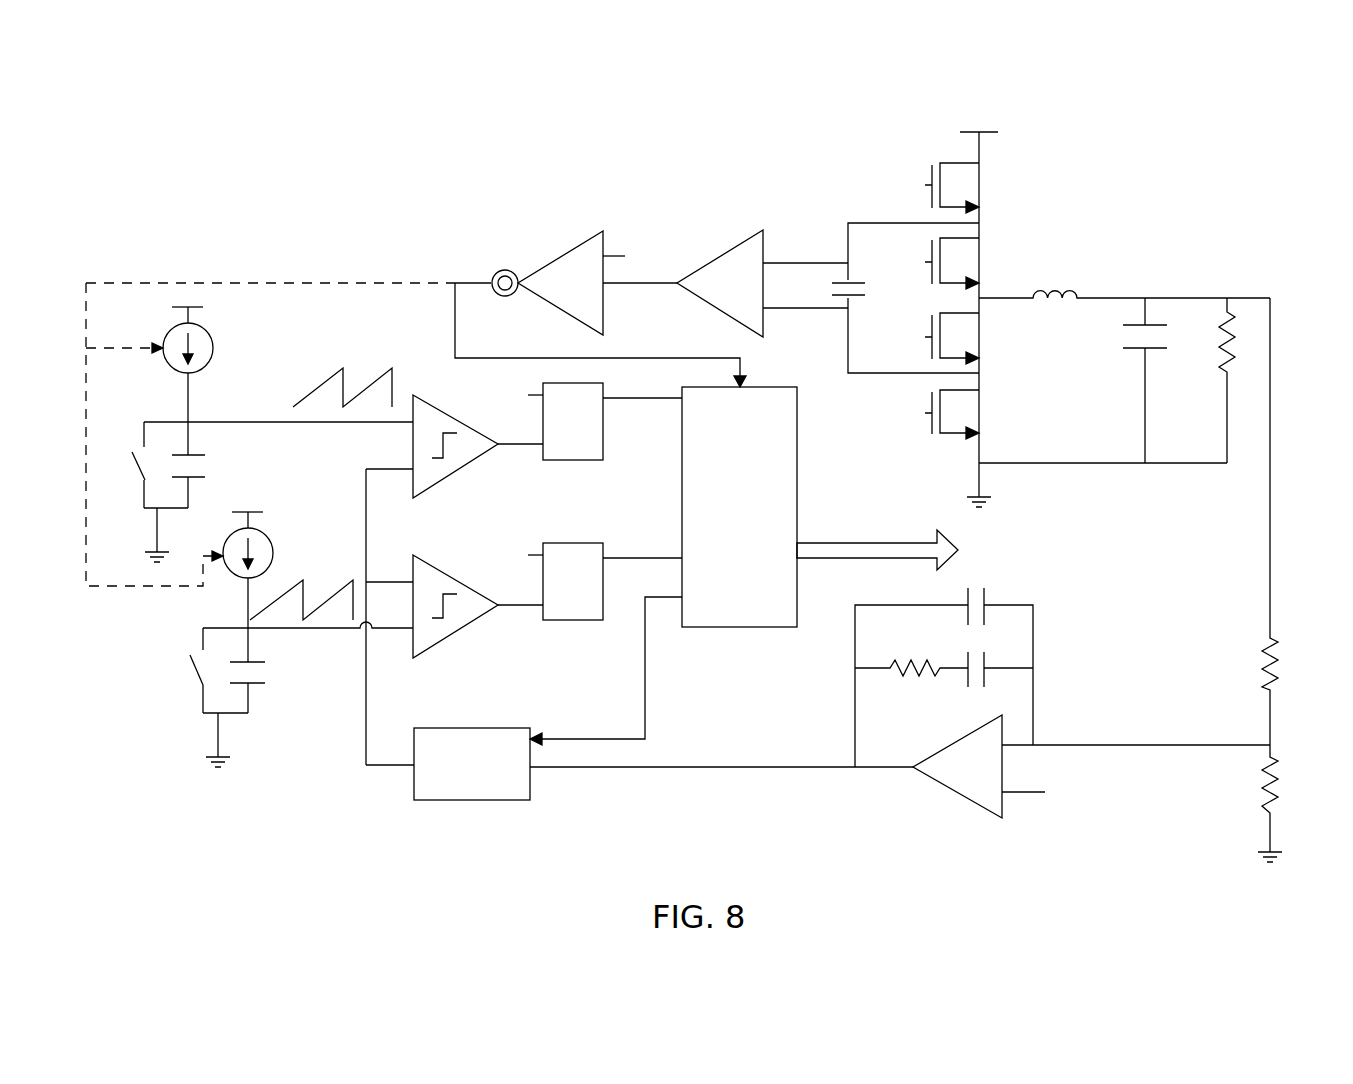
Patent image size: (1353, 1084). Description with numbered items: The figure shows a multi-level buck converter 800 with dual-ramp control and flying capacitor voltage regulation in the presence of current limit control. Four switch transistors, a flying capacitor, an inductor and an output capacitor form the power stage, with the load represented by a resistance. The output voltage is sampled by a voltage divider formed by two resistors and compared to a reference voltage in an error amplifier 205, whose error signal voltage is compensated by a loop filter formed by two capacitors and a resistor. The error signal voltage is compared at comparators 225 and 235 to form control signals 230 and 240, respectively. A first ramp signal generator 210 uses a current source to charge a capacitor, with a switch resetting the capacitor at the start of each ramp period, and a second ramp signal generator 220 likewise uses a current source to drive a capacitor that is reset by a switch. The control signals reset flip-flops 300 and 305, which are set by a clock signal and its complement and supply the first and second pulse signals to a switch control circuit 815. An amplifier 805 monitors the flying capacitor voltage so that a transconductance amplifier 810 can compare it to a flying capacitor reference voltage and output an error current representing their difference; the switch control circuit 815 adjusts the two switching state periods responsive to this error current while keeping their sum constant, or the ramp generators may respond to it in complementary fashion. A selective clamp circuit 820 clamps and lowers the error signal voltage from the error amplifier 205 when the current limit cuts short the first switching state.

The multi-level buck converter 800 is at (665, 97).
The amplifier 805 is at (735, 245).
The transconductance amplifier 810 is at (552, 258).
The switch control circuit 815 is at (737, 627).
The selective clamp circuit 820 is at (472, 800).
The error amplifier 205 is at (928, 775).
The first ramp signal generator 210 is at (172, 717).
The second ramp signal generator 220 is at (200, 413).
The comparator 225 is at (448, 635).
The control signal 230 is at (512, 606).
The comparator 235 is at (448, 477).
The control signal 240 is at (512, 445).
The flip-flop 300 is at (575, 462).
The flip-flop 305 is at (587, 620).